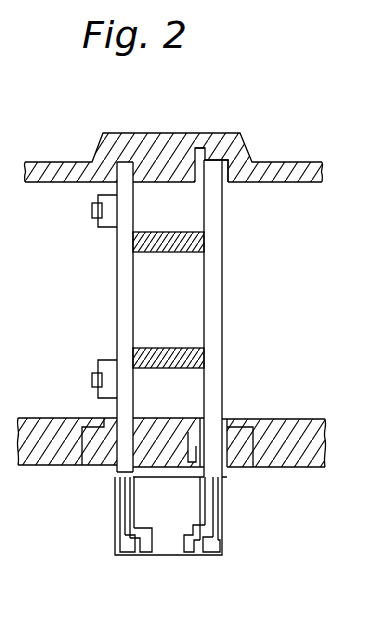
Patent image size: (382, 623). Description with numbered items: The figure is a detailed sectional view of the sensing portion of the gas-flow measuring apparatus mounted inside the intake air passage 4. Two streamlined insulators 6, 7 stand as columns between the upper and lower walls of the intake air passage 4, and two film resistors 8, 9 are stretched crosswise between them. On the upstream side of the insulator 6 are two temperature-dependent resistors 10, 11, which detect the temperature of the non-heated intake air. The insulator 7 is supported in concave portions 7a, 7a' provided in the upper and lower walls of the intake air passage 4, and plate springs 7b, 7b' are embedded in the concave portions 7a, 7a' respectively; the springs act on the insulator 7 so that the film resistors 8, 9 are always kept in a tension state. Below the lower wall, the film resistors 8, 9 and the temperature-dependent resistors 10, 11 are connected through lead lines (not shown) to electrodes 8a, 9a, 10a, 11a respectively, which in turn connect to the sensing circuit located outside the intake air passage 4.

The intake air passage 4 is at (301, 162).
The streamlined insulator 6 is at (116, 283).
The streamlined insulator 7 is at (222, 286).
The concave portion 7a is at (241, 187).
The plate spring 7b is at (211, 123).
The concave portion 7a' is at (252, 421).
The plate spring 7b' is at (230, 468).
The film resistor 8 is at (171, 232).
The film resistor 9 is at (171, 348).
The temperature-dependent resistor 10 is at (92, 212).
The temperature-dependent resistor 11 is at (93, 376).
The electrode 8a is at (195, 555).
The electrode 9a is at (222, 545).
The electrode 10a is at (142, 555).
The electrode 11a is at (120, 552).